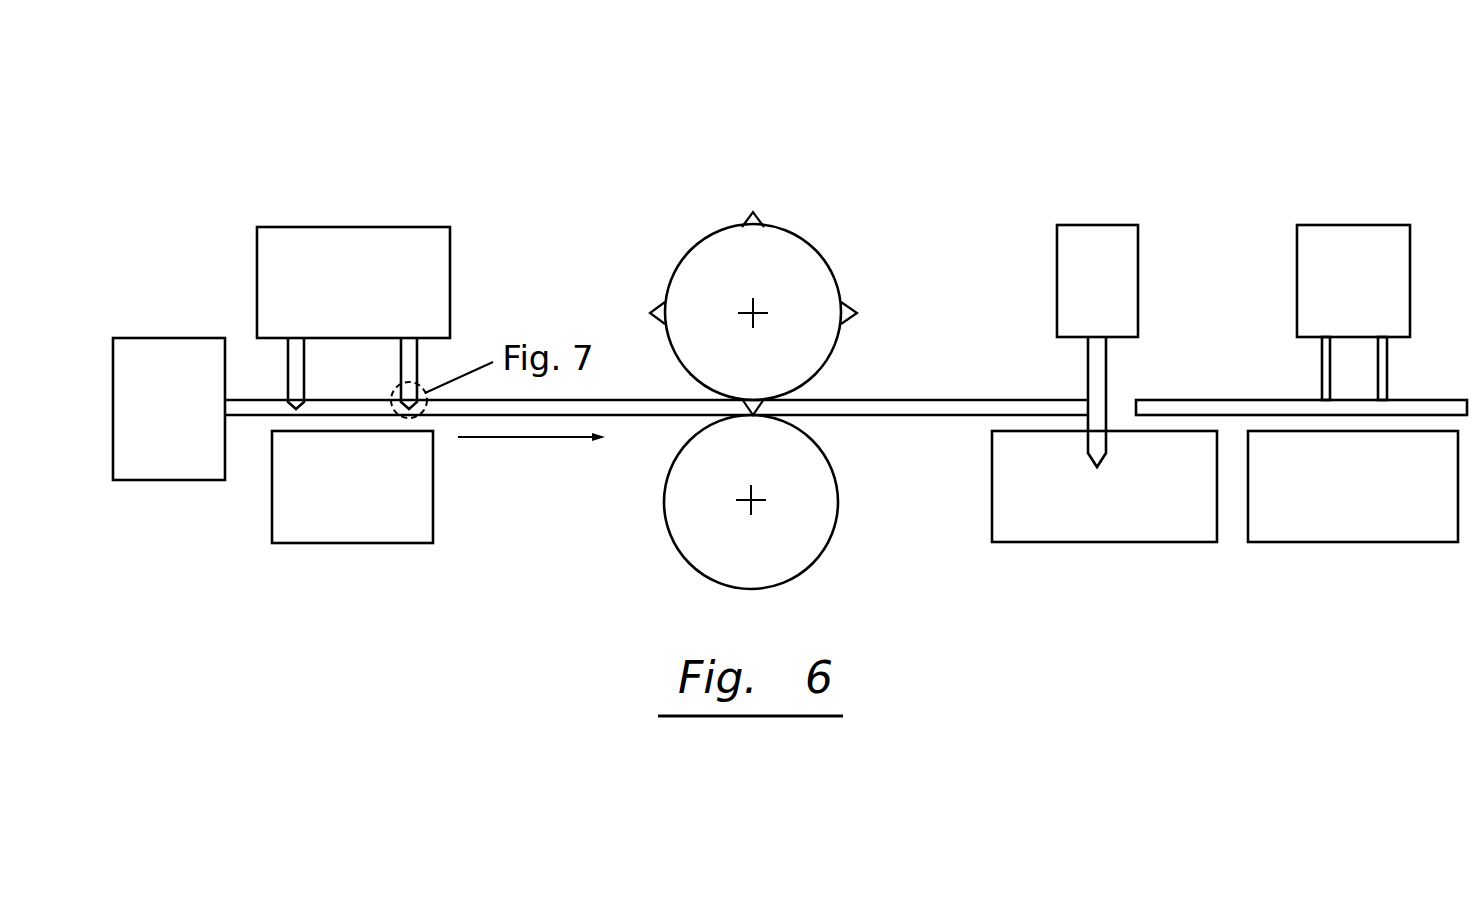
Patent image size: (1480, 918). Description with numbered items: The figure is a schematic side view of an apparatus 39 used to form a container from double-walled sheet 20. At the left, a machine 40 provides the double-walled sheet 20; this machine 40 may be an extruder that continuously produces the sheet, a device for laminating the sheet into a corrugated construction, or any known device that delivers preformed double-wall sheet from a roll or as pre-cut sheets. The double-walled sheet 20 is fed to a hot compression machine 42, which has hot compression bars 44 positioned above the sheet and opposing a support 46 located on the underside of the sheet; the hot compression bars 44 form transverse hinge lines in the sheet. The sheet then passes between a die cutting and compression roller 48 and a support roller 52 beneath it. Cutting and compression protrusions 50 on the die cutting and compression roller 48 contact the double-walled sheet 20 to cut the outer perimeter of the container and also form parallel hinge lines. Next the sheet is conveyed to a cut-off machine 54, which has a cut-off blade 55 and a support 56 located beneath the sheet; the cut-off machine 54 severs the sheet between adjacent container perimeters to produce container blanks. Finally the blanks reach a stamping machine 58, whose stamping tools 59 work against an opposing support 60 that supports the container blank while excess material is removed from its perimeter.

The double-walled sheet 20 is at (252, 418).
The apparatus 39 is at (759, 308).
The machine 40 is at (169, 409).
The hot compression machine 42 is at (353, 282).
The hot compression bars 44 is at (306, 387).
The support 46 is at (352, 487).
The die cutting and compression roller 48 is at (753, 312).
The cutting and compression protrusions 50 is at (763, 220).
The support roller 52 is at (751, 502).
The cut-off machine 54 is at (1097, 281).
The cut-off blade 55 is at (1108, 378).
The support 56 is at (1104, 486).
The stamping machine 58 is at (1353, 281).
The stamping tools 59 is at (1388, 372).
The support 60 is at (1353, 486).